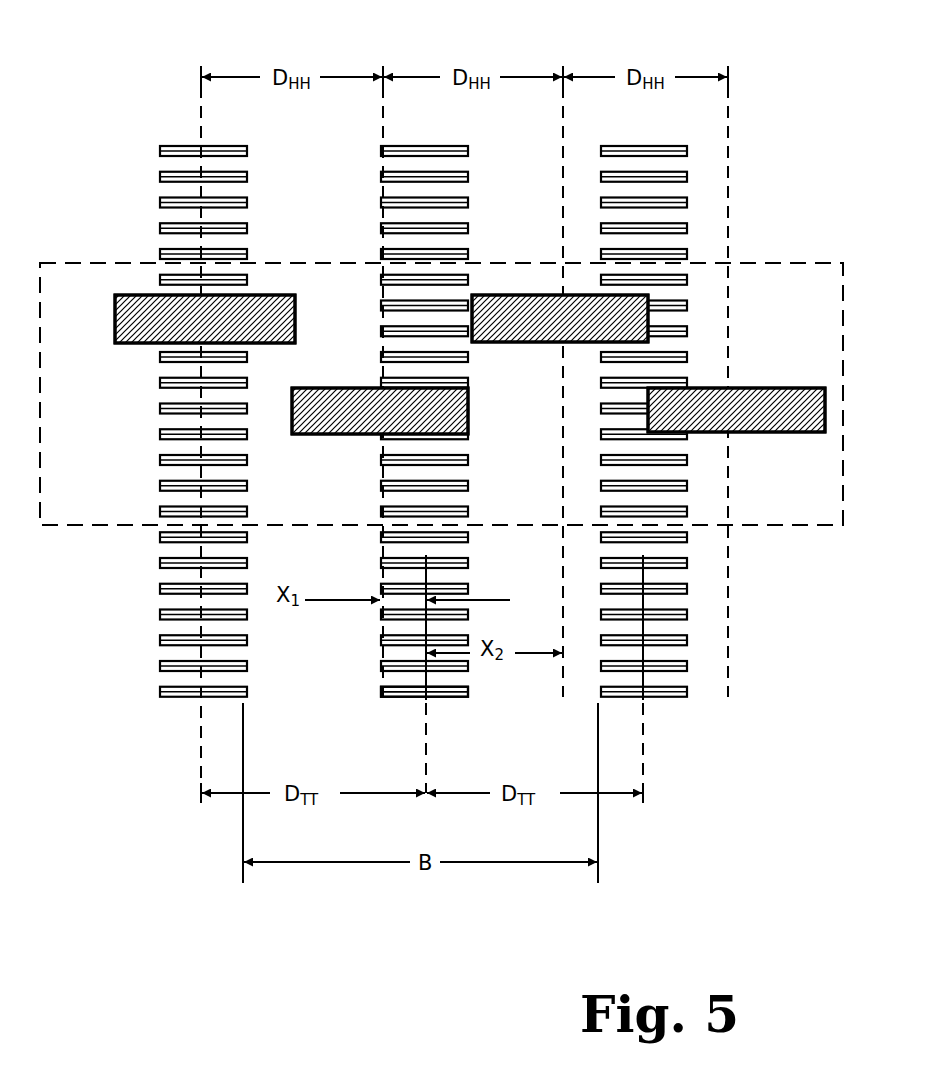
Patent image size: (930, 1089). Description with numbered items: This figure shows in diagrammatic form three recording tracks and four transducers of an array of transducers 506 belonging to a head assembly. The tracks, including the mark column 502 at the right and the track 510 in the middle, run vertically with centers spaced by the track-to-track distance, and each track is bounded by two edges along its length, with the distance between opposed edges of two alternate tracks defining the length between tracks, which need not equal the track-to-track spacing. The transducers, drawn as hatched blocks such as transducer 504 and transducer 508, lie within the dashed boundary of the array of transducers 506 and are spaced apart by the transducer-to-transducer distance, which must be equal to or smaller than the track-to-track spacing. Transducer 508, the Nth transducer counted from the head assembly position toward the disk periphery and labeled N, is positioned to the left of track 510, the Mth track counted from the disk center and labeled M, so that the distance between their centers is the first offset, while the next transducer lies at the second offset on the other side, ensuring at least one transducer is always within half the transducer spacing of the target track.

The pattern mark (head-spaced mark column) 502 is at (688, 175).
The hatched servo burst 504 is at (795, 388).
The array of transducers 506 is at (778, 527).
The transducer 508 is at (372, 388).
The track 510 is at (455, 699).
The track number M is at (428, 147).
The transducer number N is at (305, 435).